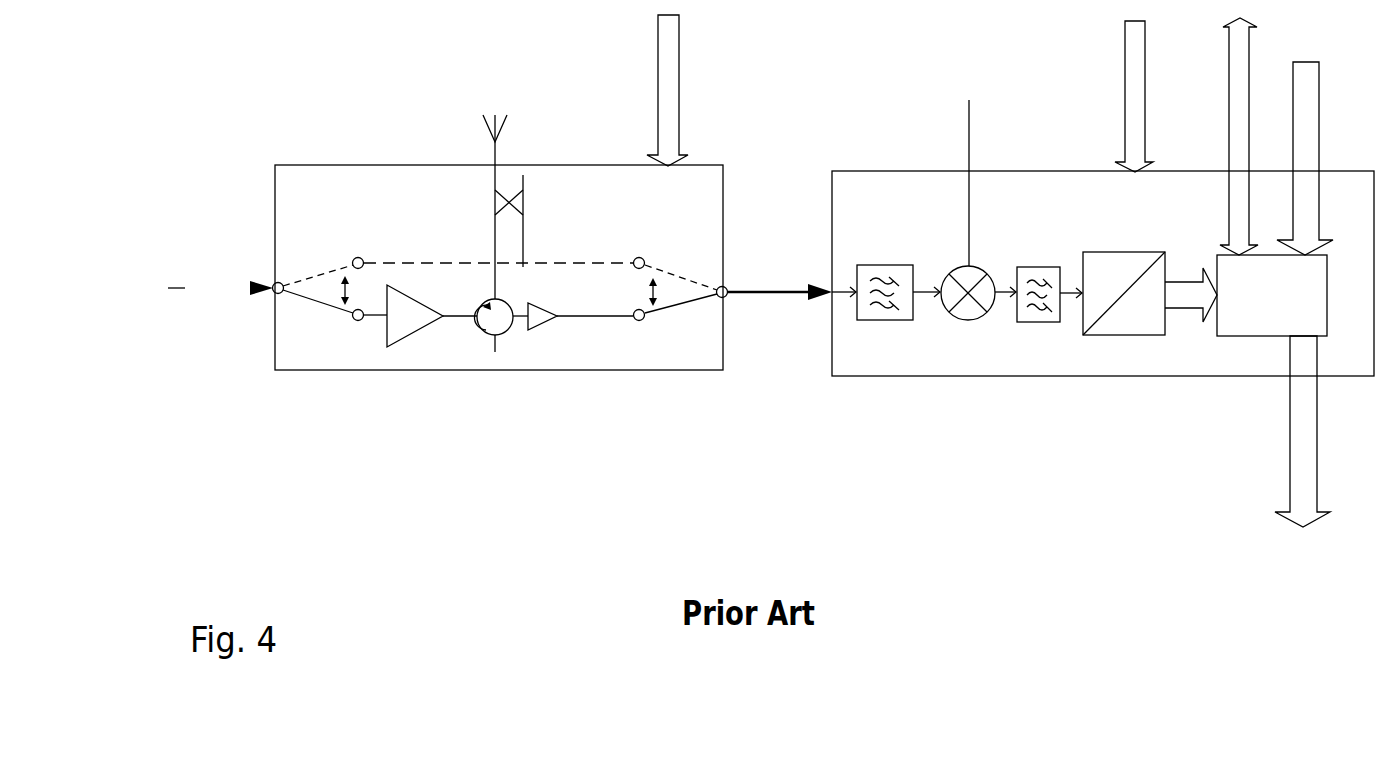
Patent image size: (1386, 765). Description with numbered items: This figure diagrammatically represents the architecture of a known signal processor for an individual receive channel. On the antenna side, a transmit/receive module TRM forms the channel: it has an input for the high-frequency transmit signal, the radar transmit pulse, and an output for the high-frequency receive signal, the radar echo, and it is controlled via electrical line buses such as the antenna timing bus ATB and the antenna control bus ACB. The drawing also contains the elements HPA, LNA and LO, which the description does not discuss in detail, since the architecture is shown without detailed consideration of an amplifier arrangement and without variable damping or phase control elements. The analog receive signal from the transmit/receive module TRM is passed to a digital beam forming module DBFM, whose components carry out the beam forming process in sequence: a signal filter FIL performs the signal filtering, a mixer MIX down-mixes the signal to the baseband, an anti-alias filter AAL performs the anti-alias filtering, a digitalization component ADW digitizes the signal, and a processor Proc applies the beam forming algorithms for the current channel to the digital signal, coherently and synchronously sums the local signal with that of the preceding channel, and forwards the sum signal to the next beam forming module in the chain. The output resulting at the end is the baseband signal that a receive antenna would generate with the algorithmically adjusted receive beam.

The transmit/receive module TRM is at (448, 244).
The high power amplifier HPA is at (415, 329).
The low noise amplifier LNA is at (541, 330).
The antenna timing bus ATB is at (904, 93).
The digital beam forming module DBFM is at (1074, 272).
The signal filter FIL is at (877, 325).
The mixer MIX is at (968, 325).
The local oscillator LO is at (971, 169).
The anti-alias filter AAL is at (1042, 327).
The digitalization component ADW is at (1126, 335).
The processor Proc is at (1248, 336).
The antenna control bus ACB is at (1243, 136).